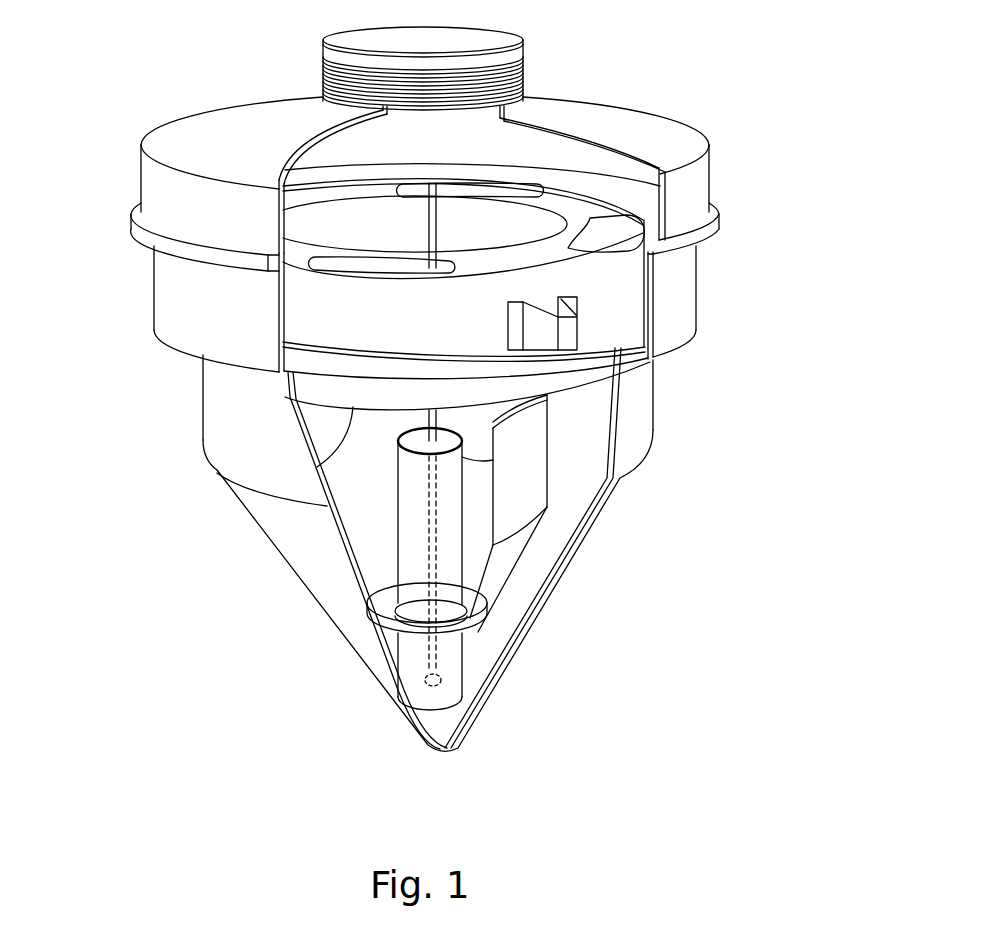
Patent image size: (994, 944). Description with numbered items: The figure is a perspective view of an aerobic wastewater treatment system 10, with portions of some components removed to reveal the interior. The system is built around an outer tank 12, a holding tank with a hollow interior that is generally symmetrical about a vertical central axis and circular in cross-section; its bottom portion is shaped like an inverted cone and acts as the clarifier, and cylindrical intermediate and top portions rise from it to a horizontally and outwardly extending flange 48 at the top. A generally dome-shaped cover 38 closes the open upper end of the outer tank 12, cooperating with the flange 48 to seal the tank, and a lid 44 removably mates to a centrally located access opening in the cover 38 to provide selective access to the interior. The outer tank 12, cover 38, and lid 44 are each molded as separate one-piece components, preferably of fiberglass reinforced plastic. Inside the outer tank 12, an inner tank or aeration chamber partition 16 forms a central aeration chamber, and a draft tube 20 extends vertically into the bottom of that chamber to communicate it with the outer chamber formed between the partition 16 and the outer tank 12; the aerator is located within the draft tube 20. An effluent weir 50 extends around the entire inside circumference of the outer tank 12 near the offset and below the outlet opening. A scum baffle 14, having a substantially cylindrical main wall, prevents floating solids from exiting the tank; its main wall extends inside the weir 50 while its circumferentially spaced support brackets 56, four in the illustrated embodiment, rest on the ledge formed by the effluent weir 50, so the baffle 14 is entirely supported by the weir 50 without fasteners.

The aerobic wastewater treatment system 10 is at (632, 567).
The outer tank 12 is at (658, 403).
The scum baffle 14 is at (154, 279).
The aeration chamber partition 16 is at (530, 540).
The draft tube 20 is at (457, 655).
The cover 38 is at (648, 115).
The lid 44 is at (527, 82).
The flange 48 is at (660, 252).
The effluent weir 50 is at (320, 468).
The support brackets 56 is at (568, 353).